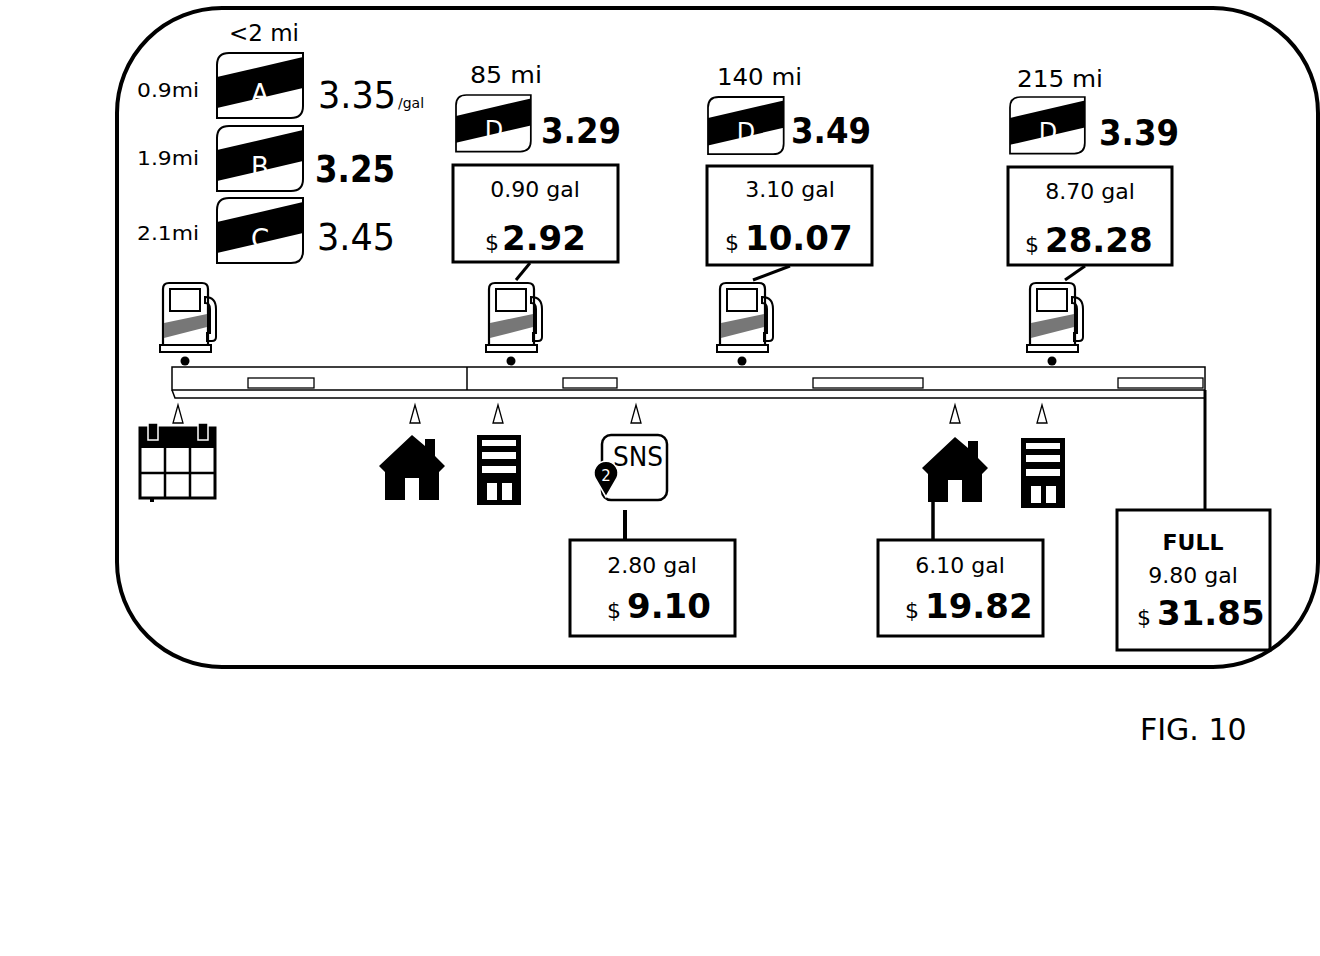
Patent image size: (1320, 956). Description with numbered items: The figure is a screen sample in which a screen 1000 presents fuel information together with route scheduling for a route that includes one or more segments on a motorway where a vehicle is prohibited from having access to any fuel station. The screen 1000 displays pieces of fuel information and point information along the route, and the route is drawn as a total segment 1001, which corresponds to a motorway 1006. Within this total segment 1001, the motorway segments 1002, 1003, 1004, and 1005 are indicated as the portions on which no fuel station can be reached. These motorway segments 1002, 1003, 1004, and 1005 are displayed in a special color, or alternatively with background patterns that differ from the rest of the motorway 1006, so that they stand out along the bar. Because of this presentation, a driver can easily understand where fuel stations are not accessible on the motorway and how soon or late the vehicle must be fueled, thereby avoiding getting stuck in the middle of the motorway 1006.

The screen 1000 is at (163, 660).
The total segment 1001 is at (689, 395).
The motorway segment 1002 is at (282, 390).
The motorway segment 1003 is at (578, 390).
The motorway segment 1004 is at (876, 392).
The motorway segment 1005 is at (1160, 395).
The motorway 1006 is at (781, 392).